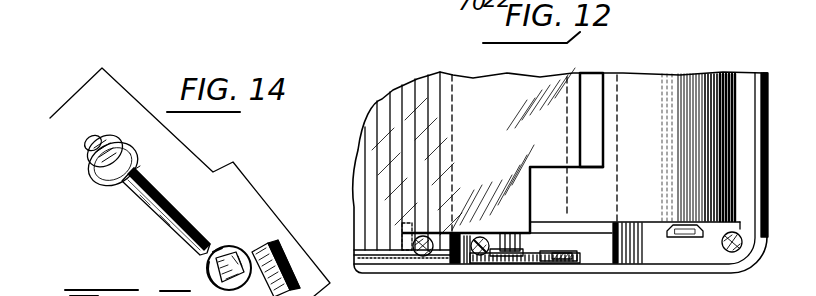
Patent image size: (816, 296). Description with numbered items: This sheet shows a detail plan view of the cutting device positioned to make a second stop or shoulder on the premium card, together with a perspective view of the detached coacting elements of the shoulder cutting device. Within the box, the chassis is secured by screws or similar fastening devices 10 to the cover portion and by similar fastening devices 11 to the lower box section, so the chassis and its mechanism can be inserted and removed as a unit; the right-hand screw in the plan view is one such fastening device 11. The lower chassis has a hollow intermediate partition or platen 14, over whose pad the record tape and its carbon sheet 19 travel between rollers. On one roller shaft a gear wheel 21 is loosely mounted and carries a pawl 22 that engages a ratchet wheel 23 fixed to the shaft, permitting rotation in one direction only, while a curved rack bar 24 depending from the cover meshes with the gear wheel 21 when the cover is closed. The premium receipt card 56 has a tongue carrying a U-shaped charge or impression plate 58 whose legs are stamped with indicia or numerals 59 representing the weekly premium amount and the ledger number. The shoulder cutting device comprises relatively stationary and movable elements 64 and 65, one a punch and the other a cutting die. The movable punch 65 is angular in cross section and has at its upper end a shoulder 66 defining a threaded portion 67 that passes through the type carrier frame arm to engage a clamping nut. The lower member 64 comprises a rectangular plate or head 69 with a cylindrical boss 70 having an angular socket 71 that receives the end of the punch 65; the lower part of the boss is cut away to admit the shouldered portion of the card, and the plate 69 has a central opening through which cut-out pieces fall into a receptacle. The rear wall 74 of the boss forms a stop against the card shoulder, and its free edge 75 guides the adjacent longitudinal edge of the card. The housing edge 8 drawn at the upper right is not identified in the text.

In FIG. 12, the housing 8 is at (765, 77).
In FIG. 12, the fastening devices 10 is at (762, 118).
In FIG. 12, the fastening devices 11 is at (735, 251).
In FIG. 12, the partition or platen 14 is at (567, 243).
In FIG. 12, the carbon sheet 19 is at (672, 107).
In FIG. 12, the gear wheel 21 is at (493, 262).
In FIG. 12, the pawl 22 is at (522, 247).
In FIG. 12, the ratchet wheel 23 is at (495, 240).
In FIG. 12, the rack bar 24 is at (572, 258).
In FIG. 12, the premium receipt card 56 is at (468, 97).
In FIG. 12, the charge or impression plate 58 is at (603, 157).
In FIG. 12, the indicia or numerals 59 is at (596, 90).
In FIG. 14, the stationary element 64 is at (261, 242).
In FIG. 14, the movable element or punch 65 is at (152, 163).
In FIG. 12, the movable element or punch 65 is at (413, 256).
In FIG. 14, the shoulder 66 is at (118, 148).
In FIG. 14, the threaded portion 67 is at (85, 152).
In FIG. 14, the plate or head 69 is at (274, 278).
In FIG. 12, the plate or head 69 is at (406, 0).
In FIG. 14, the cylindrical boss 70 is at (265, 250).
In FIG. 14, the angular socket 71 is at (214, 257).
In FIG. 14, the rear wall 74 is at (232, 256).
In FIG. 14, the free edge 75 is at (207, 277).